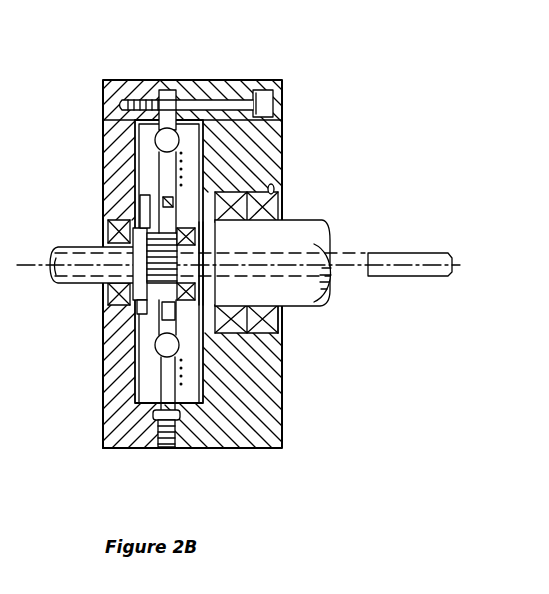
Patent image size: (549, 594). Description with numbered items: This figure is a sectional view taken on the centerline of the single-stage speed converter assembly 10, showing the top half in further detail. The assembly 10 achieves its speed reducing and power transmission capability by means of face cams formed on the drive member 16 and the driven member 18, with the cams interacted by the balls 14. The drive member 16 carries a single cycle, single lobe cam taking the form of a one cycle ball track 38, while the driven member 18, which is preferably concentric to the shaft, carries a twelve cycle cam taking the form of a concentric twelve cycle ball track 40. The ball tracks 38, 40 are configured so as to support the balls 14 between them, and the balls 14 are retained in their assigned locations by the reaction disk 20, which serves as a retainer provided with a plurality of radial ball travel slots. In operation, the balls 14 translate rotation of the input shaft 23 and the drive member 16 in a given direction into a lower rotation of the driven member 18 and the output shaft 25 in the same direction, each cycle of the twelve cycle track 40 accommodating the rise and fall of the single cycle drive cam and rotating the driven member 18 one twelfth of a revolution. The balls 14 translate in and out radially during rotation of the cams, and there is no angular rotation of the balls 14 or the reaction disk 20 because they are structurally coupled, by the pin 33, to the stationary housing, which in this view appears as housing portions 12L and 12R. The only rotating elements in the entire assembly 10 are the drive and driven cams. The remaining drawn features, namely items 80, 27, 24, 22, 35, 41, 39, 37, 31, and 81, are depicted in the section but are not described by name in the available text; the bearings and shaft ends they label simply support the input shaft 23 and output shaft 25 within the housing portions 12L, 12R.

The assembly 10 is at (235, 249).
The reaction disk 20 is at (160, 87).
The housing cover 80 is at (237, 80).
The one cycle ball track 38 is at (118, 104).
The left housing half 12L is at (135, 152).
The concentric 12 cycle ball track 40 is at (190, 170).
The bracket 27 is at (140, 208).
The upper bearing 24 is at (268, 203).
The left bearing 22 is at (107, 226).
The output shaft 35 is at (207, 268).
The axis 41 is at (32, 263).
The rod 39 is at (406, 253).
The shaft end 37 is at (313, 270).
The input shaft 23 is at (80, 285).
The output shaft 25 is at (303, 307).
The gear 31 is at (146, 299).
The seal 81 is at (279, 334).
The balls 14 is at (142, 361).
The driven member 18 is at (203, 350).
The drive member 16 is at (153, 390).
The right housing half 12R is at (283, 423).
The pin 33 is at (158, 438).